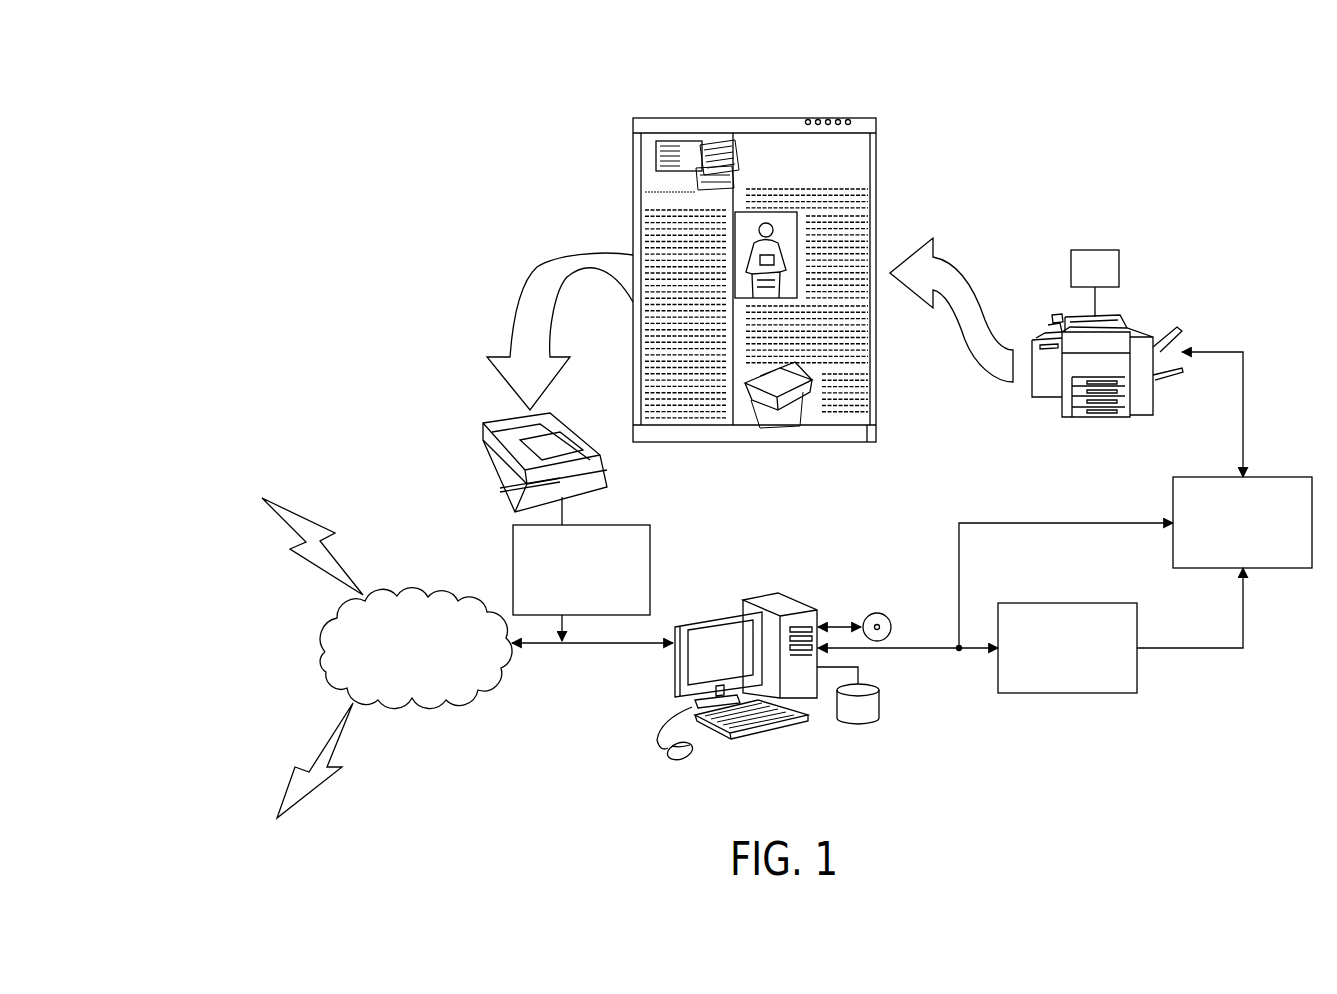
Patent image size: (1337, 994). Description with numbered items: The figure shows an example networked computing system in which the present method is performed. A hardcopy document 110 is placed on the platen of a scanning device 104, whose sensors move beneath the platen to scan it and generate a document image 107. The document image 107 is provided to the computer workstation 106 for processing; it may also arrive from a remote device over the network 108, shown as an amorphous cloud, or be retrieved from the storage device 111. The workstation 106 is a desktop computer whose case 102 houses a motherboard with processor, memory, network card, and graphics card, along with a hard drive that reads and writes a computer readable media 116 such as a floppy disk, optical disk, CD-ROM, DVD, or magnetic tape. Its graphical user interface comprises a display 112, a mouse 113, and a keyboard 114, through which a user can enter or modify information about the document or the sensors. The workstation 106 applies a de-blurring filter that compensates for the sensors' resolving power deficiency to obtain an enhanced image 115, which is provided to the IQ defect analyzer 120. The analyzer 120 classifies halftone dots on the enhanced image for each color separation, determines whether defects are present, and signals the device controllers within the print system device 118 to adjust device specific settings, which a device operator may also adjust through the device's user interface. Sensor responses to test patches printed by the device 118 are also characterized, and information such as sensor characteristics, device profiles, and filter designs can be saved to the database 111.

The computer housing 102 is at (793, 595).
The scanning device 104 is at (490, 413).
The computer workstation 106 is at (740, 580).
The document image 107 is at (618, 525).
The network 108 is at (415, 592).
The hardcopy document 110 is at (877, 142).
The storage device 111 is at (857, 727).
The display 112 is at (700, 660).
The mouse 113 is at (673, 760).
The keyboard 114 is at (773, 727).
The enhanced image 115 is at (1067, 603).
The computer readable media 116 is at (878, 612).
The print system device 118 is at (1148, 266).
The IQ defect analyzer 120 is at (1270, 477).